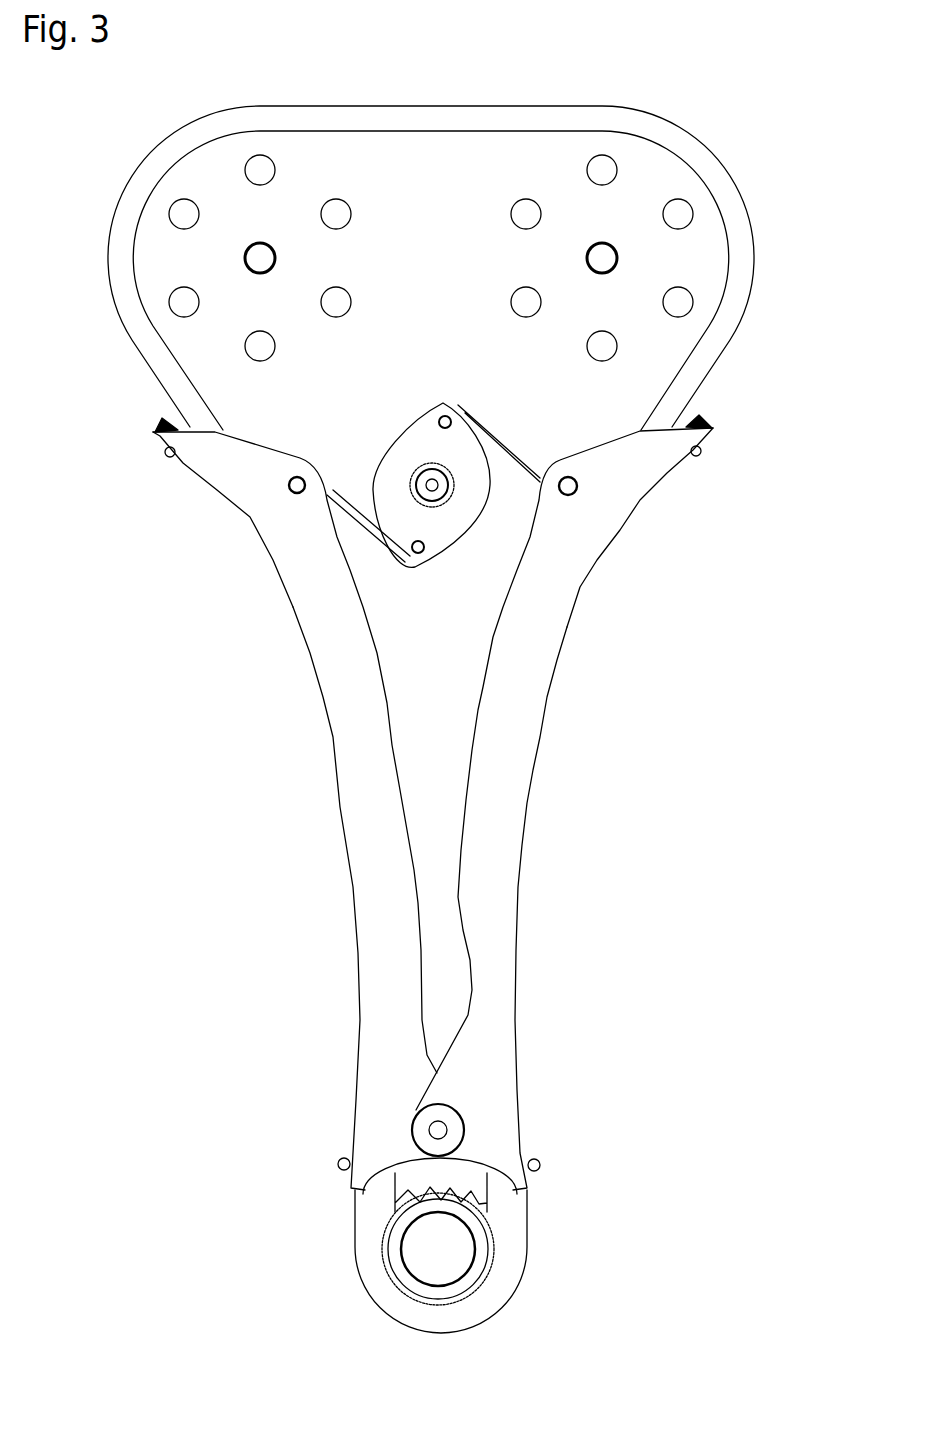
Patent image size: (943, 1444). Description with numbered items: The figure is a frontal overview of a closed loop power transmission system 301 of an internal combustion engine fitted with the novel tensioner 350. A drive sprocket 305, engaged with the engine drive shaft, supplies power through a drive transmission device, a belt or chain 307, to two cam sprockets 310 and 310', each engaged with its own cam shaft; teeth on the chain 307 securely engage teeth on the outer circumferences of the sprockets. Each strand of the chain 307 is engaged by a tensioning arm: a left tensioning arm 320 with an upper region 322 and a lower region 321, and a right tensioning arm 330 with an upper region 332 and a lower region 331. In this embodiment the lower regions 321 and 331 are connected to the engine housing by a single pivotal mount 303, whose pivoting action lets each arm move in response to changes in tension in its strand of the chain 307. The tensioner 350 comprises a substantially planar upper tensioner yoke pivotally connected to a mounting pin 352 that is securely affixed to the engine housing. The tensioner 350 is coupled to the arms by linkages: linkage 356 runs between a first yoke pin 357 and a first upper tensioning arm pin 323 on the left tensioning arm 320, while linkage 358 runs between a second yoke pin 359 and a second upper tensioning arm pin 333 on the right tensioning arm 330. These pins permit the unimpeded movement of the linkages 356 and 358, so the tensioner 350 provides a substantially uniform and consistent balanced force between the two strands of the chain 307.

The driving mechanism 301 is at (218, 760).
The pivotal mount 303 is at (438, 1130).
The drive sprocket 305 is at (463, 1213).
The chain 307 is at (150, 347).
The cam sprocket 310 is at (645, 210).
The cam sprocket 310' is at (189, 240).
The left tensioning arm 320 is at (367, 817).
The lower region of left tensioning arm 321 is at (362, 1157).
The upper region of left tensioning arm 322 is at (273, 517).
The first upper tensioning arm pin 323 is at (297, 485).
The right tensioning arm 330 is at (500, 830).
The lower region of right tensioning arm 331 is at (510, 1157).
The upper region of right tensioning arm 332 is at (582, 517).
The second upper tensioning arm pin 333 is at (568, 487).
The tensioner 350 is at (424, 359).
The mounting pin 352 is at (432, 485).
The linkage 356 is at (380, 537).
The first yoke pin 357 is at (418, 547).
The linkage 358 is at (507, 452).
The second yoke pin 359 is at (445, 422).